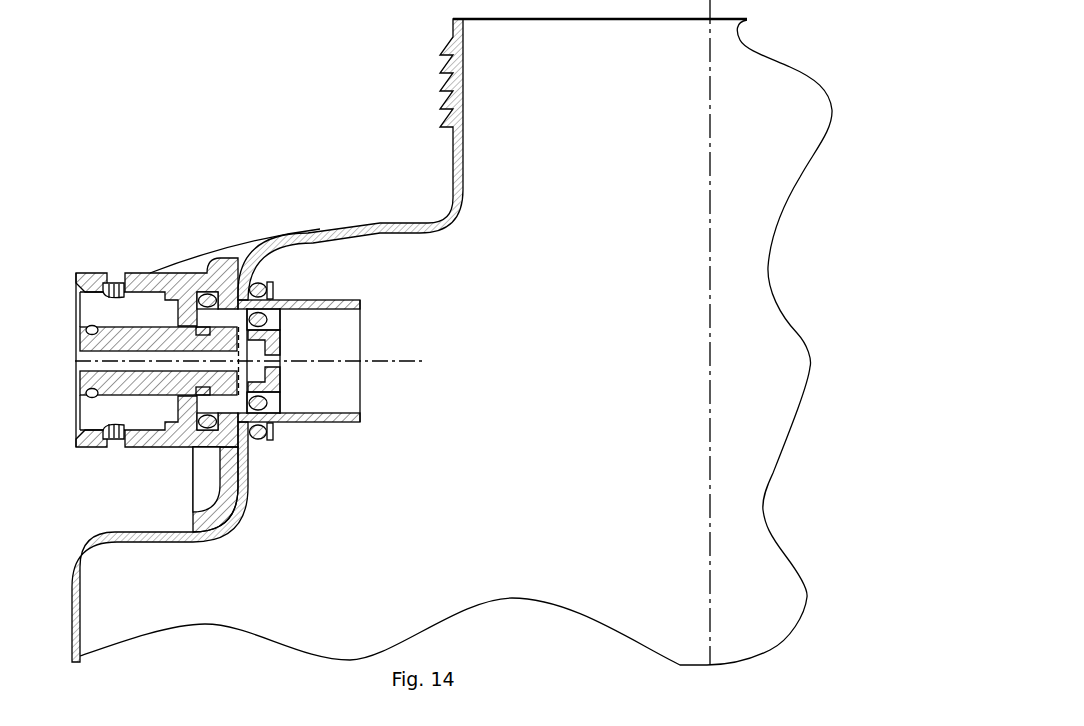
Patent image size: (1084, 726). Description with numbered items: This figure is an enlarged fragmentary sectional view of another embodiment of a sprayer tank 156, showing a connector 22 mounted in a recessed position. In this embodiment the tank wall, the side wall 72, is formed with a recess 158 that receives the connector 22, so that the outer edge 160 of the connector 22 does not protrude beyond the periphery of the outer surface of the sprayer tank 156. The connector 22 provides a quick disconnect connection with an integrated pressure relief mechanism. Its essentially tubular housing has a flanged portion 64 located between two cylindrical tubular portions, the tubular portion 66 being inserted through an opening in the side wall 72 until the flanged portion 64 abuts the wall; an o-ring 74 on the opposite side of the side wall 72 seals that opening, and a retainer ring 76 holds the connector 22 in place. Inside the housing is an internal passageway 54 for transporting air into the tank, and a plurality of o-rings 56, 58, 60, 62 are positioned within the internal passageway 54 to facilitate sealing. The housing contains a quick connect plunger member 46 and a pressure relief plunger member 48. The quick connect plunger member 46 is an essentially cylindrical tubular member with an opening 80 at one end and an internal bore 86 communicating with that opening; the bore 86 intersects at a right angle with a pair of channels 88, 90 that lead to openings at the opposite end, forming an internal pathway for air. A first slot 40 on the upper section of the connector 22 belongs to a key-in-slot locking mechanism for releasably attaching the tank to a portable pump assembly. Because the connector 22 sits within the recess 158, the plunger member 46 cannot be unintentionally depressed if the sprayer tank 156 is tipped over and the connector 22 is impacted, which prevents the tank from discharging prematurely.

The connector 22 is at (176, 274).
The first slot 40 is at (118, 289).
The quick connect plunger member 46 is at (85, 332).
The pressure relief plunger member 48 is at (185, 413).
The internal passageway 54 is at (348, 415).
The o-ring 56 is at (88, 394).
The o-ring 58 is at (210, 421).
The o-ring 60 is at (203, 331).
The o-ring 62 is at (268, 318).
The flanged portion 64 is at (210, 512).
The tubular portion 66 is at (345, 300).
The side wall 72 is at (312, 233).
The o-ring 74 is at (275, 432).
The retainer ring 76 is at (273, 290).
The opening 80 is at (92, 348).
The internal bore 86 is at (127, 366).
The channel 88 is at (246, 343).
The channel 90 is at (244, 383).
The sprayer tank 156 is at (350, 159).
The recess 158 is at (107, 513).
The outer edge 160 is at (76, 285).